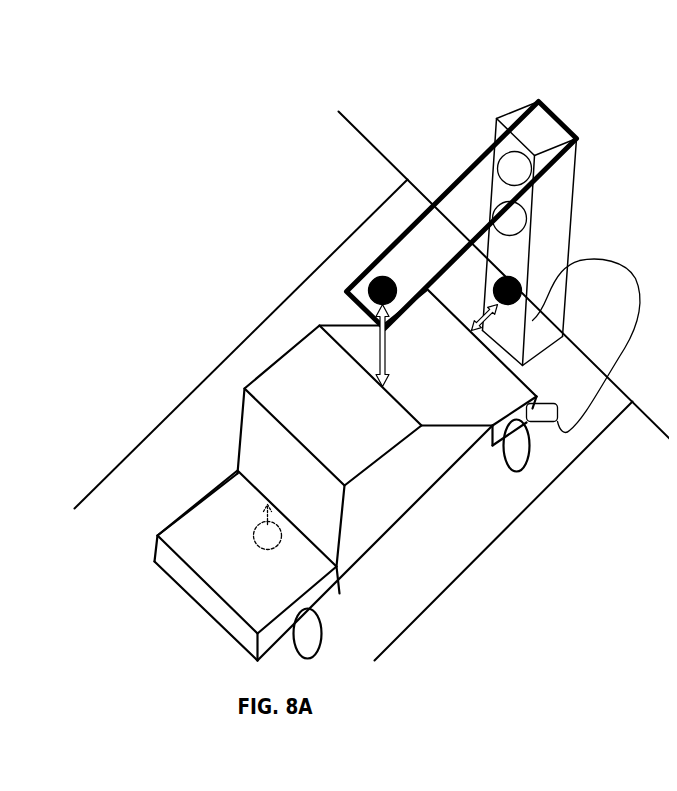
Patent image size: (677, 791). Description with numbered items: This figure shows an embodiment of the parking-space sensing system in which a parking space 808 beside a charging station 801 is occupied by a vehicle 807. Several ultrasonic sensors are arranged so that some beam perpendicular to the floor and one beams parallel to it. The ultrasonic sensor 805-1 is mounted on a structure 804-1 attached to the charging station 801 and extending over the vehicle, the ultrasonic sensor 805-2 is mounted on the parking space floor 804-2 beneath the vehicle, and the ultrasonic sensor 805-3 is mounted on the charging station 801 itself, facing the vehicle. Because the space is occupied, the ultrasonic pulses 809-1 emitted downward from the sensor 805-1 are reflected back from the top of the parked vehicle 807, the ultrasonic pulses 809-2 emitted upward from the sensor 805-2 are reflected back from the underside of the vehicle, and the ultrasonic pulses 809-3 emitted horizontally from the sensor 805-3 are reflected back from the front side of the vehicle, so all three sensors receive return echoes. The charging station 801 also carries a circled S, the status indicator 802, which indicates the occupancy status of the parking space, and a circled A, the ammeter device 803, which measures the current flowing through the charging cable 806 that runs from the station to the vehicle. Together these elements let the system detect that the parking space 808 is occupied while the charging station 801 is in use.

The charging station 801 is at (528, 122).
The status indicator 802 is at (490, 163).
The ammeter device 803 is at (493, 222).
The structure 804-1 is at (399, 237).
The parking space floor 804-2 is at (192, 450).
The ultrasonic sensor 805-1 is at (352, 283).
The ultrasonic sensor 805-2 is at (253, 537).
The ultrasonic sensor 805-3 is at (541, 258).
The charging cable 806 is at (634, 336).
The vehicle 807 is at (310, 371).
The parking space 808 is at (97, 562).
The ultrasonic pulses 809-1 is at (374, 351).
The ultrasonic pulses 809-2 is at (257, 520).
The ultrasonic pulses 809-3 is at (476, 325).